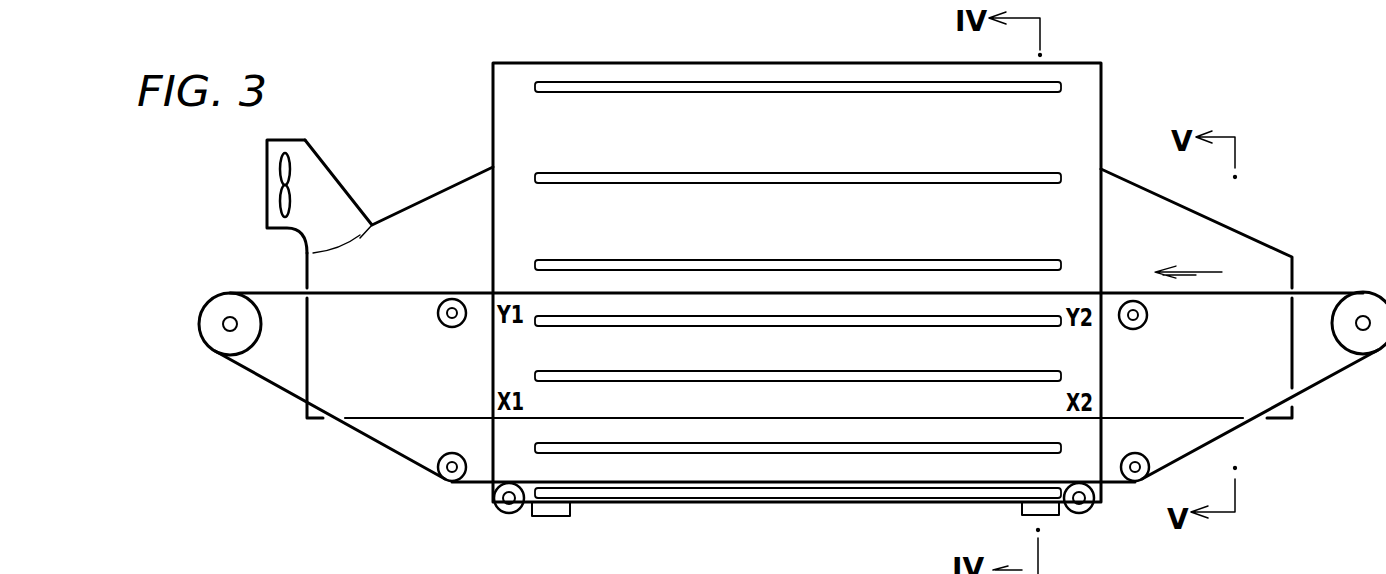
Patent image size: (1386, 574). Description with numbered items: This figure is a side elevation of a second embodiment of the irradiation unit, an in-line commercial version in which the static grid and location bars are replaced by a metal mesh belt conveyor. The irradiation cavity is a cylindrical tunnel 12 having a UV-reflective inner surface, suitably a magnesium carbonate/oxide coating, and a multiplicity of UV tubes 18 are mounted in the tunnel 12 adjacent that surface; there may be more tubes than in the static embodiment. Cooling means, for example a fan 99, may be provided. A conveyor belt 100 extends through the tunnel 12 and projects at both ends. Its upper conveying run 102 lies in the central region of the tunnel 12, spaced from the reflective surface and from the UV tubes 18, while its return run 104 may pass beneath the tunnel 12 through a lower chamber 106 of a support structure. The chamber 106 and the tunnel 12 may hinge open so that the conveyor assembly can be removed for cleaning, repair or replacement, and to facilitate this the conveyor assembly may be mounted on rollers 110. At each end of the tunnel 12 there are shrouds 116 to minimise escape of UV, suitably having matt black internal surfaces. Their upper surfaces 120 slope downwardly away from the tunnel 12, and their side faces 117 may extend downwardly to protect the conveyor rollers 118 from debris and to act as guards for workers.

The tunnel 12 is at (635, 63).
The UV tubes 18 is at (906, 93).
The fan 99 is at (297, 163).
The conveyor belt 100 is at (251, 393).
The upper conveying run 102 is at (397, 290).
The return run 104 is at (473, 487).
The lower chamber 106 is at (1082, 442).
The rollers 110 is at (511, 513).
The shrouds 116 is at (447, 220).
The side faces 117 is at (302, 422).
The conveyor rollers 118 is at (451, 455).
The upper surfaces 120 is at (400, 207).